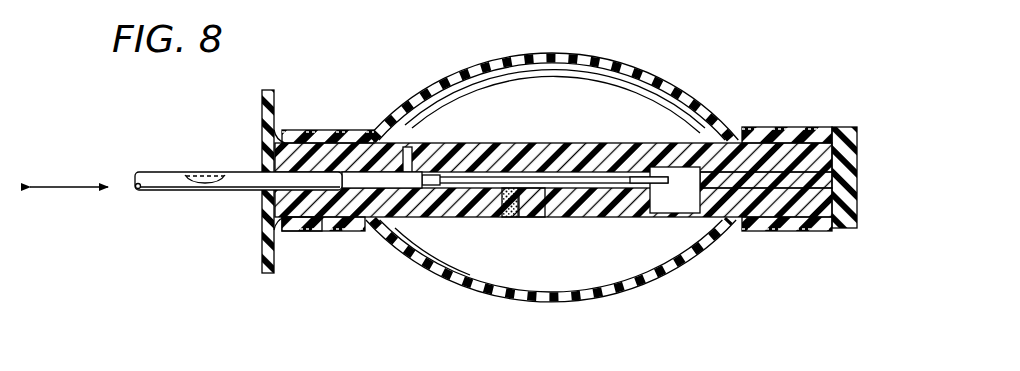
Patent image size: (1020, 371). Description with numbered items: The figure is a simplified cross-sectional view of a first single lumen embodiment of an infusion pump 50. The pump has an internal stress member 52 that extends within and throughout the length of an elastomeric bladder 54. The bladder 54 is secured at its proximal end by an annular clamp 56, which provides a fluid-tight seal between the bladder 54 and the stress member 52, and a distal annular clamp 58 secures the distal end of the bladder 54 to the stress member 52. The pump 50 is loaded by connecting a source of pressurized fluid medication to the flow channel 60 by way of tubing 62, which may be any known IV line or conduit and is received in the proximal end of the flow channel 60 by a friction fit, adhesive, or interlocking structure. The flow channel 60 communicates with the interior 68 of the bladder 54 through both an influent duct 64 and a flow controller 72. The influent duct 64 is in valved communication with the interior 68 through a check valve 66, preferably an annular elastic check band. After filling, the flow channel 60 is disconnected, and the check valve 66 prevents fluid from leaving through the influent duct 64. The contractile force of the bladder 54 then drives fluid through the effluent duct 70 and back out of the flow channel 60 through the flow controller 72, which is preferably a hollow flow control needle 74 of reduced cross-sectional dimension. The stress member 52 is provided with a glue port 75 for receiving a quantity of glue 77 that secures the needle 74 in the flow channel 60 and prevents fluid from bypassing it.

The infusion pump 50 is at (430, 50).
The internal stress member 52 is at (780, 150).
The elastomeric bladder 54 is at (632, 299).
The annular clamp 56 is at (304, 232).
The distal annular clamp 58 is at (786, 232).
The flow channel 60 is at (262, 191).
The tubing 62 is at (167, 172).
The influent duct 64 is at (406, 146).
The check valve 66 is at (410, 221).
The interior of bladder 68 is at (612, 86).
The effluent duct 70 is at (672, 208).
The flow controller 72 is at (467, 146).
The flow control needle 74 is at (665, 176).
The glue port 75 is at (536, 216).
The glue 77 is at (508, 218).